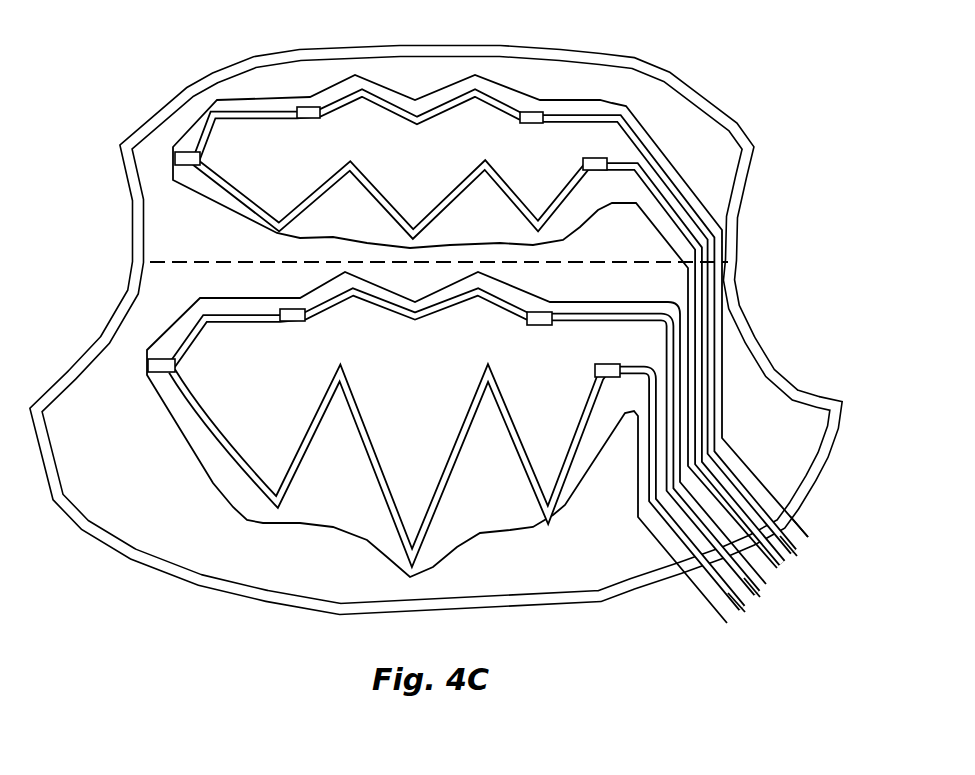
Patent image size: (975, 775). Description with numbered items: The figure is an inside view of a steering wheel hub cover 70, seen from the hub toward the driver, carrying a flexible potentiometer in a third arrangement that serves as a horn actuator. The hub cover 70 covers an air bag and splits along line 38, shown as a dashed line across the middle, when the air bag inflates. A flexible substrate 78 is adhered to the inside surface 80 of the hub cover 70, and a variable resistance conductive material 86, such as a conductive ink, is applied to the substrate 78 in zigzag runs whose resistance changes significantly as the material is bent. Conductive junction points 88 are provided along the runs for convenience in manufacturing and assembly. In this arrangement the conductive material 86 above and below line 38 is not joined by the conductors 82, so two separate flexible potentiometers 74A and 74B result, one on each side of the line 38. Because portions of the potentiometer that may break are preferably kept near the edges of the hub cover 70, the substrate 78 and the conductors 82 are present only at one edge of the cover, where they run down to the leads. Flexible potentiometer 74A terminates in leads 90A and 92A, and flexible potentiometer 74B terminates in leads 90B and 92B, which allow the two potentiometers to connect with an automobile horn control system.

The hub cover 70 is at (728, 119).
The flexible potentiometer 74A is at (165, 140).
The flexible potentiometer 74B is at (432, 447).
The flexible substrate 78 is at (183, 428).
The inside surface 80 is at (436, 330).
The line 38 is at (200, 263).
The conductors 82 is at (203, 113).
The variable resistance conductive material 86 is at (436, 118).
The conductive junction points 88 is at (303, 119).
The lead 90A is at (803, 543).
The lead 92A is at (795, 555).
The lead 90B is at (756, 598).
The lead 92B is at (740, 613).